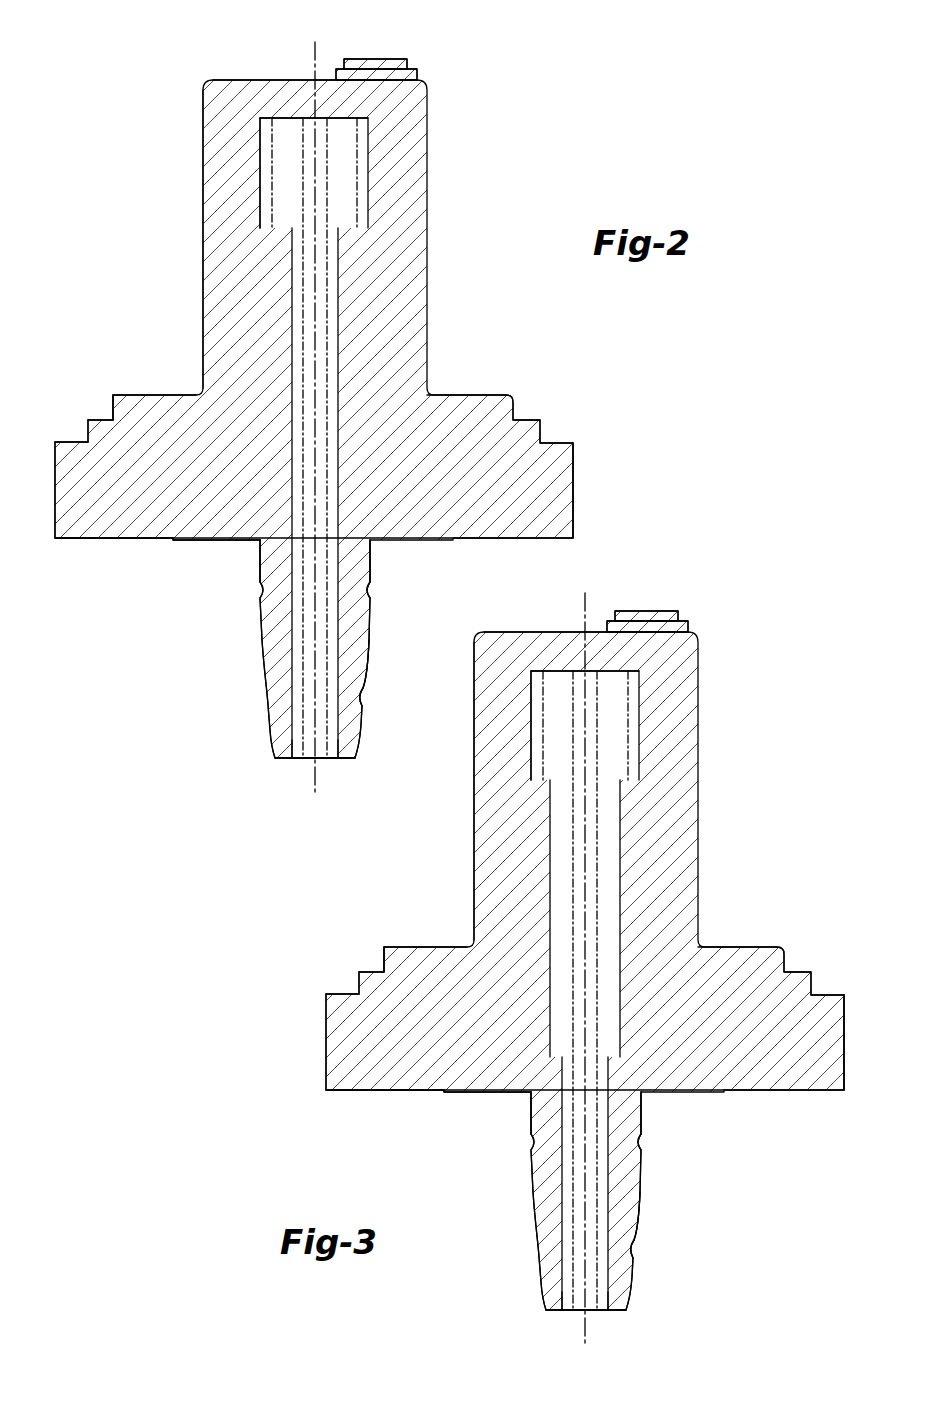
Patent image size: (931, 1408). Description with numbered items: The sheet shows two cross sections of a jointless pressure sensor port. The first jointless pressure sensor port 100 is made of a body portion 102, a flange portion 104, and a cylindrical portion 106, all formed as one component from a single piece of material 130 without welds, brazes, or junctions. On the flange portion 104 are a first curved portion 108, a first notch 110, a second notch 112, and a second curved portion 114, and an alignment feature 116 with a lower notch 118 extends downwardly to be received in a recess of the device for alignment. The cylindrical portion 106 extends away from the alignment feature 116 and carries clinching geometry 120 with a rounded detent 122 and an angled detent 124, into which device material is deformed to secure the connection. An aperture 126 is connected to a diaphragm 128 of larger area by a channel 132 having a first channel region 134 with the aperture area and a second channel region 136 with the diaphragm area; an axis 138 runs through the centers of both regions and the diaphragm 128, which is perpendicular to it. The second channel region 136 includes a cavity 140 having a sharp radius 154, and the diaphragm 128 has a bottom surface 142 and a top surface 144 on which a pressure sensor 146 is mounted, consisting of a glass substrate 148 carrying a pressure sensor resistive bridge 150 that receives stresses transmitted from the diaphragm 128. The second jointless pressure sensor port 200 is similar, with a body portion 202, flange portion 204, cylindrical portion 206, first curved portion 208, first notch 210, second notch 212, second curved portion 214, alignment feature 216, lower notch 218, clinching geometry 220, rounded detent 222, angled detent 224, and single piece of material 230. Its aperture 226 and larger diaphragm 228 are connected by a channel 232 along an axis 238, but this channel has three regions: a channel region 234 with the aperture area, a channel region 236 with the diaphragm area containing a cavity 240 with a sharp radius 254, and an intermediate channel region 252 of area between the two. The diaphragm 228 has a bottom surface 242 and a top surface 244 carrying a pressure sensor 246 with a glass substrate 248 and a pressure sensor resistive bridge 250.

In FIG. 2, the jointless pressure sensor port 100 is at (539, 90).
In FIG. 2, the body portion 102 is at (398, 298).
In FIG. 2, the flange portion 104 is at (489, 410).
In FIG. 2, the cylindrical portion 106 is at (241, 652).
In FIG. 2, the first curved portion 108 is at (110, 393).
In FIG. 2, the first notch 110 is at (112, 418).
In FIG. 2, the second notch 112 is at (88, 418).
In FIG. 2, the second curved portion 114 is at (88, 442).
In FIG. 2, the alignment feature 116 is at (227, 540).
In FIG. 2, the lower notch 118 is at (172, 539).
In FIG. 2, the clinching geometry 120 is at (389, 636).
In FIG. 2, the rounded detent 122 is at (368, 590).
In FIG. 2, the angled detent 124 is at (362, 700).
In FIG. 2, the aperture 126 is at (337, 758).
In FIG. 2, the diaphragm 128 is at (300, 93).
In FIG. 2, the single piece of material 130 is at (548, 478).
In FIG. 2, the channel 132 is at (289, 696).
In FIG. 2, the first channel region 134 is at (291, 745).
In FIG. 2, the second channel region 136 is at (260, 200).
In FIG. 2, the axis 138 is at (315, 50).
In FIG. 2, the cavity 140 is at (282, 145).
In FIG. 2, the bottom surface 142 is at (343, 118).
In FIG. 2, the top surface 144 is at (273, 78).
In FIG. 2, the pressure sensor 146 is at (440, 61).
In FIG. 2, the glass substrate 148 is at (410, 76).
In FIG. 2, the pressure sensor resistive bridge 150 is at (360, 63).
In FIG. 2, the sharp radius 154 is at (282, 123).
In FIG. 3, the jointless pressure sensor port 200 is at (806, 648).
In FIG. 3, the body portion 202 is at (673, 893).
In FIG. 3, the flange portion 204 is at (762, 960).
In FIG. 3, the cylindrical portion 206 is at (512, 1204).
In FIG. 3, the first curved portion 208 is at (382, 946).
In FIG. 3, the first notch 210 is at (383, 971).
In FIG. 3, the second notch 212 is at (359, 971).
In FIG. 3, the second curved portion 214 is at (359, 994).
In FIG. 3, the alignment feature 216 is at (497, 1093).
In FIG. 3, the lower notch 218 is at (443, 1092).
In FIG. 3, the clinching geometry 220 is at (659, 1188).
In FIG. 3, the rounded detent 222 is at (639, 1143).
In FIG. 3, the angled detent 224 is at (633, 1253).
In FIG. 3, the aperture 226 is at (626, 1310).
In FIG. 3, the diaphragm 228 is at (559, 632).
In FIG. 3, the single piece of material 230 is at (813, 1060).
In FIG. 3, the channel 232 is at (559, 1259).
In FIG. 3, the channel region 234 is at (562, 1300).
In FIG. 3, the channel region 236 is at (531, 770).
In FIG. 3, the axis 238 is at (585, 607).
In FIG. 3, the cavity 240 is at (551, 727).
In FIG. 3, the bottom surface 242 is at (614, 671).
In FIG. 3, the top surface 244 is at (563, 663).
In FIG. 3, the pressure sensor 246 is at (712, 615).
In FIG. 3, the glass substrate 248 is at (683, 628).
In FIG. 3, the pressure sensor resistive bridge 250 is at (661, 615).
In FIG. 3, the intermediate channel region 252 is at (621, 825).
In FIG. 3, the sharp radius 254 is at (553, 677).